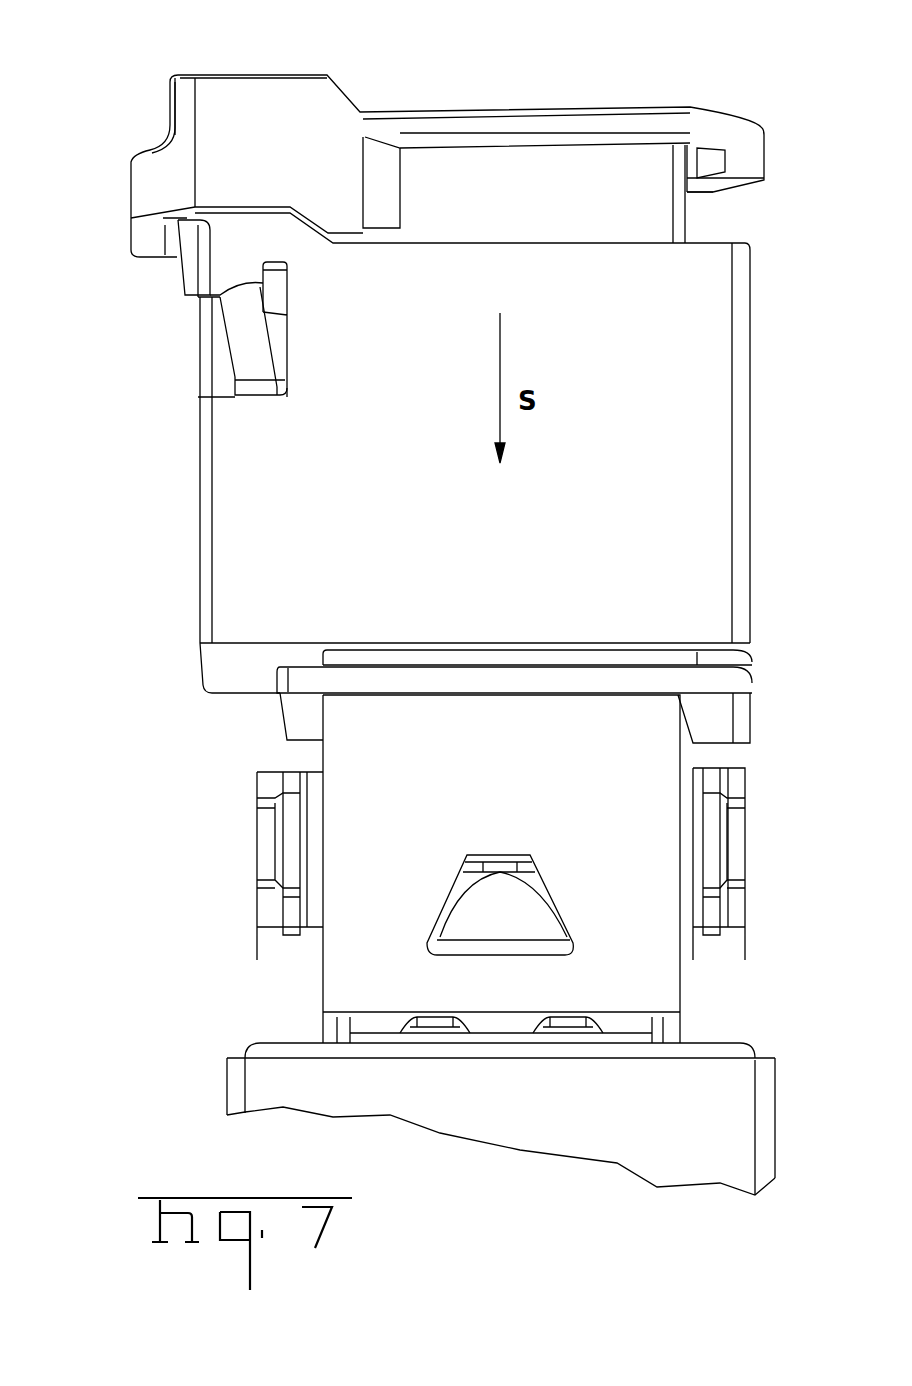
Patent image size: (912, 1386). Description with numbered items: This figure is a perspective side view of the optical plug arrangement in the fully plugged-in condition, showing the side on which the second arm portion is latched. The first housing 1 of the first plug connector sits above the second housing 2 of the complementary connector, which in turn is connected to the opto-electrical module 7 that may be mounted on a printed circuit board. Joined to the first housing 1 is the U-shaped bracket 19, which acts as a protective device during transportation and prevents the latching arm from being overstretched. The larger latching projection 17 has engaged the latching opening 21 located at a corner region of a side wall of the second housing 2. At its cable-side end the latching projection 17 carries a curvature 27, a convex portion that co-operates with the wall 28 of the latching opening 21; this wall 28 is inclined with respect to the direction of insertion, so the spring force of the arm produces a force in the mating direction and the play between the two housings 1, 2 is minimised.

The first housing 1 is at (528, 163).
The second housing 2 is at (280, 577).
The opto-electrical module 7 is at (393, 880).
The latching projection 17 is at (248, 342).
The U-shaped bracket 19 is at (148, 173).
The latching opening 21 is at (217, 378).
The curvature 27 is at (237, 307).
The wall 28 is at (240, 285).